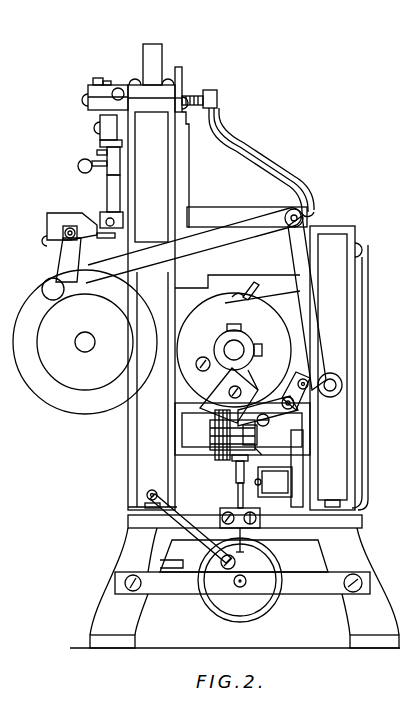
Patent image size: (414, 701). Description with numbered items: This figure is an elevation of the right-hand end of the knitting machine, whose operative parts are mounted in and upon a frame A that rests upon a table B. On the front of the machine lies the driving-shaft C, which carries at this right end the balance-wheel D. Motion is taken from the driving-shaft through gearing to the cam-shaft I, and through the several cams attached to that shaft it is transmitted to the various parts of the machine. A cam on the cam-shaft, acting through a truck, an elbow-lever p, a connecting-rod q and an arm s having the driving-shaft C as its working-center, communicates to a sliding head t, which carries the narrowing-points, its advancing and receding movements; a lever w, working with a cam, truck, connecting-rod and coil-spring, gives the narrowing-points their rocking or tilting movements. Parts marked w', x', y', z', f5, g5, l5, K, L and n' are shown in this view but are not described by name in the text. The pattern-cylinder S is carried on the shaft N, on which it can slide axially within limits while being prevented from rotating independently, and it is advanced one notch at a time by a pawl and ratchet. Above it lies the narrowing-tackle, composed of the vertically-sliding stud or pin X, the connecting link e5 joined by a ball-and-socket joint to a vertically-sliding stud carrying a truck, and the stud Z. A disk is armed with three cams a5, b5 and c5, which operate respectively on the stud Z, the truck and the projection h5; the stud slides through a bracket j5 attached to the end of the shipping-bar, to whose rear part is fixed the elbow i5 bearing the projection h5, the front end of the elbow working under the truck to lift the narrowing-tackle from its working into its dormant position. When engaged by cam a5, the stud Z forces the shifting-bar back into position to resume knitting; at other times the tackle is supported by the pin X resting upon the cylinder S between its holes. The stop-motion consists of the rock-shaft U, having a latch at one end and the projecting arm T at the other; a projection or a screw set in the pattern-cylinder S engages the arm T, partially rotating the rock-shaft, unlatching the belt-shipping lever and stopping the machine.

The frame A is at (217, 277).
The handle lever L is at (248, 158).
The connecting-rod q is at (193, 245).
The elbow-lever p is at (315, 306).
The pattern-cylinder S is at (68, 260).
The arm s is at (240, 580).
The balance-wheel D is at (72, 286).
The driving-shaft C is at (85, 342).
The sliding head t is at (69, 229).
The lever w is at (90, 209).
The arm extension w' is at (88, 142).
The roller x' is at (92, 158).
The pin y' is at (105, 211).
The plate z' is at (110, 243).
The cam a5 is at (234, 344).
The cam-shaft I is at (238, 347).
The cam b5 is at (194, 360).
The cam c5 is at (229, 395).
The projection h5 is at (296, 387).
The elbow i5 is at (277, 408).
The bracket j5 is at (255, 420).
The stud Z is at (210, 422).
The pin f5 is at (261, 456).
The collar g5 is at (232, 463).
The connecting-link e5 is at (231, 473).
The rod end l5 is at (237, 497).
The bracket block K is at (273, 471).
The table B is at (245, 514).
The rock-shaft U is at (188, 520).
The projecting arm T is at (244, 556).
The vertically-sliding stud or pin X is at (250, 553).
The pivot n' is at (236, 563).
The shaft N is at (242, 583).